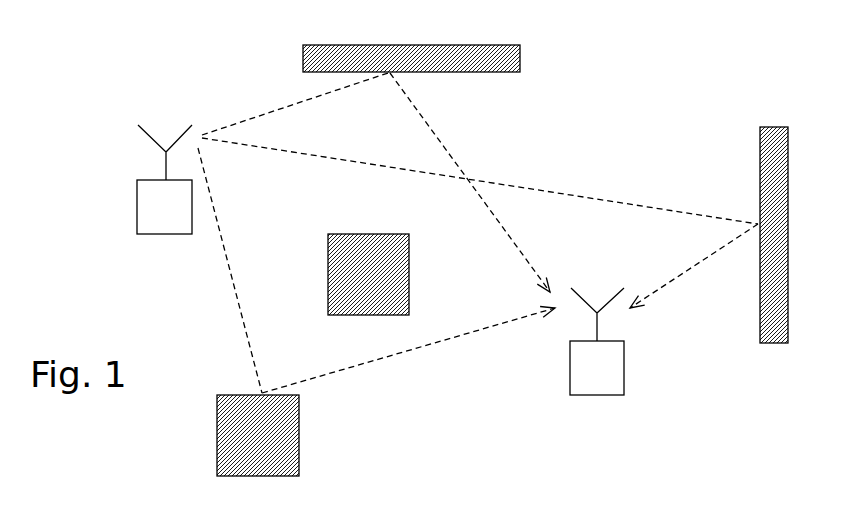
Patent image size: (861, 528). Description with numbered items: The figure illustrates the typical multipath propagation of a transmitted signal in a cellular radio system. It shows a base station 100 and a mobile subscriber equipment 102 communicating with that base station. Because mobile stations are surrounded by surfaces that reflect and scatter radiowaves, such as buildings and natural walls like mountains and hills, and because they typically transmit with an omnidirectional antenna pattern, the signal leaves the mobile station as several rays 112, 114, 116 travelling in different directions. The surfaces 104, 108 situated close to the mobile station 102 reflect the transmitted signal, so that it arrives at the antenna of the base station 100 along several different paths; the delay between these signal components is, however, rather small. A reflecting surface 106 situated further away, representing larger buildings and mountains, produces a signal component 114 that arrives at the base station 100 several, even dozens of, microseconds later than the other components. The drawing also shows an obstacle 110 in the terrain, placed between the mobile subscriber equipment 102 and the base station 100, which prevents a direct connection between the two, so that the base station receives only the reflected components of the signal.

The base station 100 is at (570, 368).
The mobile subscriber equipment 102 is at (137, 207).
The reflecting surface 104 is at (453, 45).
The reflecting surface 106 is at (777, 127).
The reflecting surface 108 is at (217, 448).
The obstacle 110 is at (327, 255).
The ray 112 is at (437, 142).
The ray 114 is at (573, 195).
The ray 116 is at (234, 293).